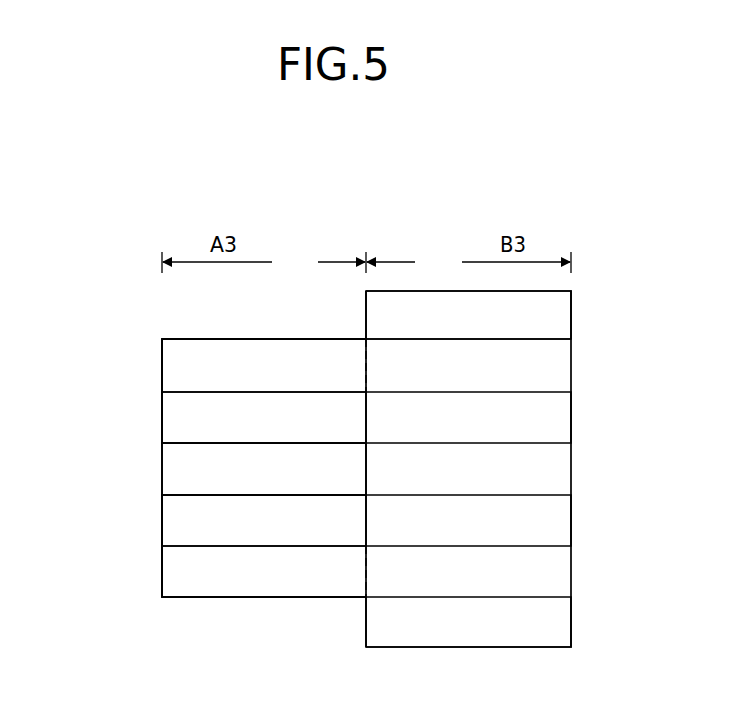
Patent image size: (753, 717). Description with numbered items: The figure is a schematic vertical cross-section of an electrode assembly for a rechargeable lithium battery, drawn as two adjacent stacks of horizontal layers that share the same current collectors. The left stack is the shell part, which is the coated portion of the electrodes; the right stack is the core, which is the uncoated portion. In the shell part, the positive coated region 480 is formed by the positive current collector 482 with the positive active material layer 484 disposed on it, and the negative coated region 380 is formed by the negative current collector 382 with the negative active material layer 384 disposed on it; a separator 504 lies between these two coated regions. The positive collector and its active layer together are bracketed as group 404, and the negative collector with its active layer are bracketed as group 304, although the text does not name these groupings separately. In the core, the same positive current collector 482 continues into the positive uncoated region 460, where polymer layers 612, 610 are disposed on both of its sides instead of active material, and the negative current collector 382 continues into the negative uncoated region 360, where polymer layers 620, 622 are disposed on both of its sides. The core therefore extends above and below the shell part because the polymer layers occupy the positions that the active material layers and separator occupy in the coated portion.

The negative coated region 380 is at (277, 606).
The negative uncoated region 360 is at (464, 606).
The upper layer group 404 is at (100, 353).
The positive current collector 482 is at (173, 369).
The positive active material layer 484 is at (173, 421).
The separator 504 is at (173, 473).
The lower layer group 304 is at (100, 510).
The negative active material layer 384 is at (173, 523).
The negative current collector 382 is at (173, 578).
The polymer layer 612 is at (546, 321).
The polymer layer 610 is at (546, 418).
The polymer layer 620 is at (546, 518).
The polymer layer 622 is at (566, 625).
The positive coated region 480 is at (289, 333).
The positive uncoated region 460 is at (431, 333).